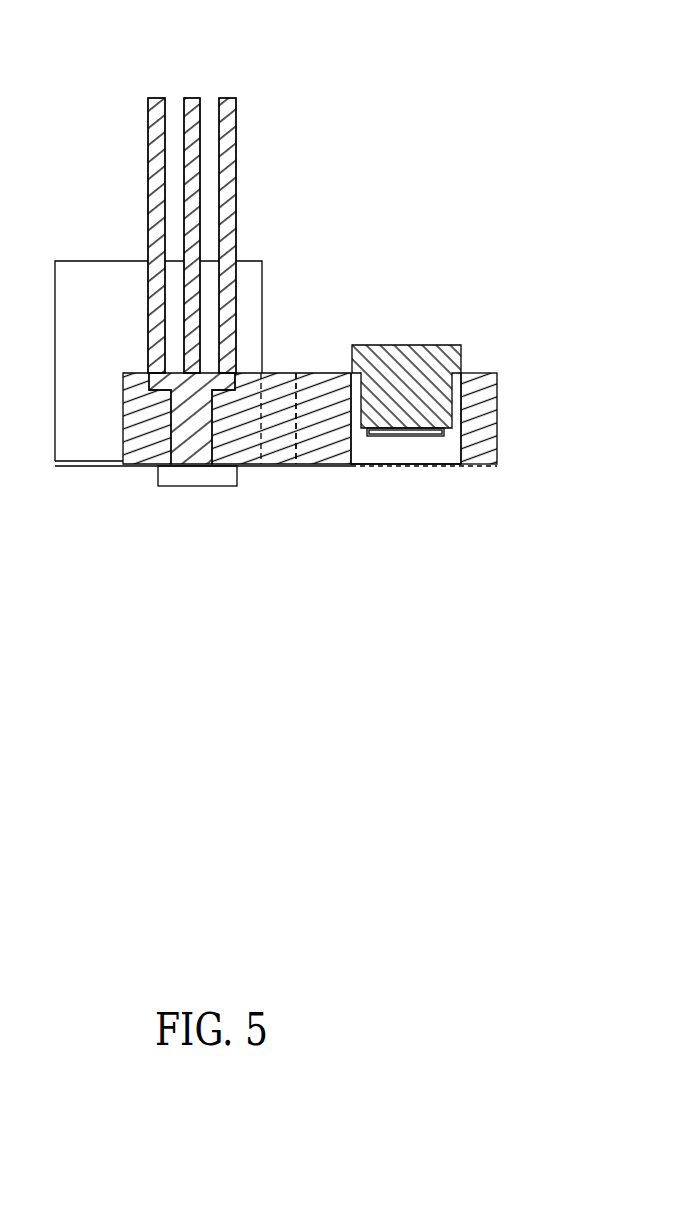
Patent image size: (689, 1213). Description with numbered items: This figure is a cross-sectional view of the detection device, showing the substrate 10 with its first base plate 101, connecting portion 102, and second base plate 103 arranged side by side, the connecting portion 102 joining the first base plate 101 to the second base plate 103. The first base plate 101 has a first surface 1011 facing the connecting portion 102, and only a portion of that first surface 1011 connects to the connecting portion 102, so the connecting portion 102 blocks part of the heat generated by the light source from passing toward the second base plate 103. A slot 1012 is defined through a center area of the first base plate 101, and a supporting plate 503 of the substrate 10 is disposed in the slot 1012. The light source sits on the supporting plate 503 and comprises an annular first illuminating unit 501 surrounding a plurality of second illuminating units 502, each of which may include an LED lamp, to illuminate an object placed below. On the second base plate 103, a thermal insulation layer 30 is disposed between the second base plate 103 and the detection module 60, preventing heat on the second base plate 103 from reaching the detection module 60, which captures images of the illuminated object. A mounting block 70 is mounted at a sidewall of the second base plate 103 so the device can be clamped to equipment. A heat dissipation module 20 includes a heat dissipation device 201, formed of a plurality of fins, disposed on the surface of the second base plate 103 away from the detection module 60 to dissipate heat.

The substrate 10 is at (310, 438).
The first base plate 101 is at (325, 447).
The first surface 1011 is at (296, 402).
The connecting portion 102 is at (283, 447).
The slot 1012 is at (404, 466).
The second base plate 103 is at (243, 440).
The heat dissipation module 20 is at (140, 189).
The heat dissipation device 201 is at (157, 21).
The thermal insulation layer 30 is at (93, 466).
The detection module 60 is at (178, 474).
The mounting block 70 is at (108, 272).
The first illuminating unit 501 is at (456, 418).
The second illuminating unit 502 is at (410, 432).
The supporting plate 503 is at (418, 357).